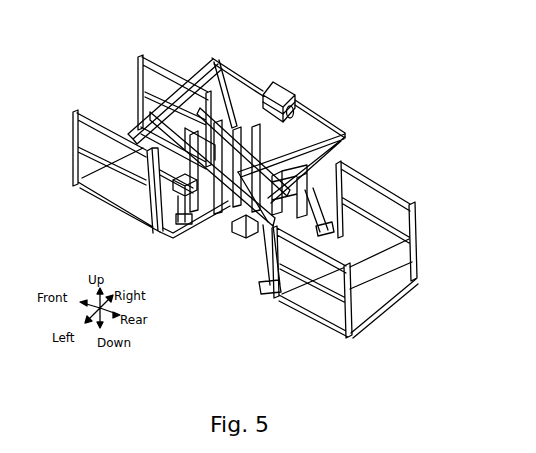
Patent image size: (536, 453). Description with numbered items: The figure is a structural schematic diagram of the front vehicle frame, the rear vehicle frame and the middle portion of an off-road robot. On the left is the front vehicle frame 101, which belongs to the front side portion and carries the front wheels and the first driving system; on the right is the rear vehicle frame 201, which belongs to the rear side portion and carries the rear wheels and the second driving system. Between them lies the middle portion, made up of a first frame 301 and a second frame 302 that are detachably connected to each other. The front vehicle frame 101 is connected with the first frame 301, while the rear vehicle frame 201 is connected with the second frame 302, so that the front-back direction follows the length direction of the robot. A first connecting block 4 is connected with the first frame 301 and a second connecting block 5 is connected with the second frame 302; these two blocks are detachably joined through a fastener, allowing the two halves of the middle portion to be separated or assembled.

The front vehicle frame 101 is at (140, 56).
The rear vehicle frame 201 is at (381, 188).
The first frame 301 is at (241, 75).
The second frame 302 is at (318, 117).
The first connecting block 4 is at (272, 84).
The second connecting block 5 is at (288, 92).